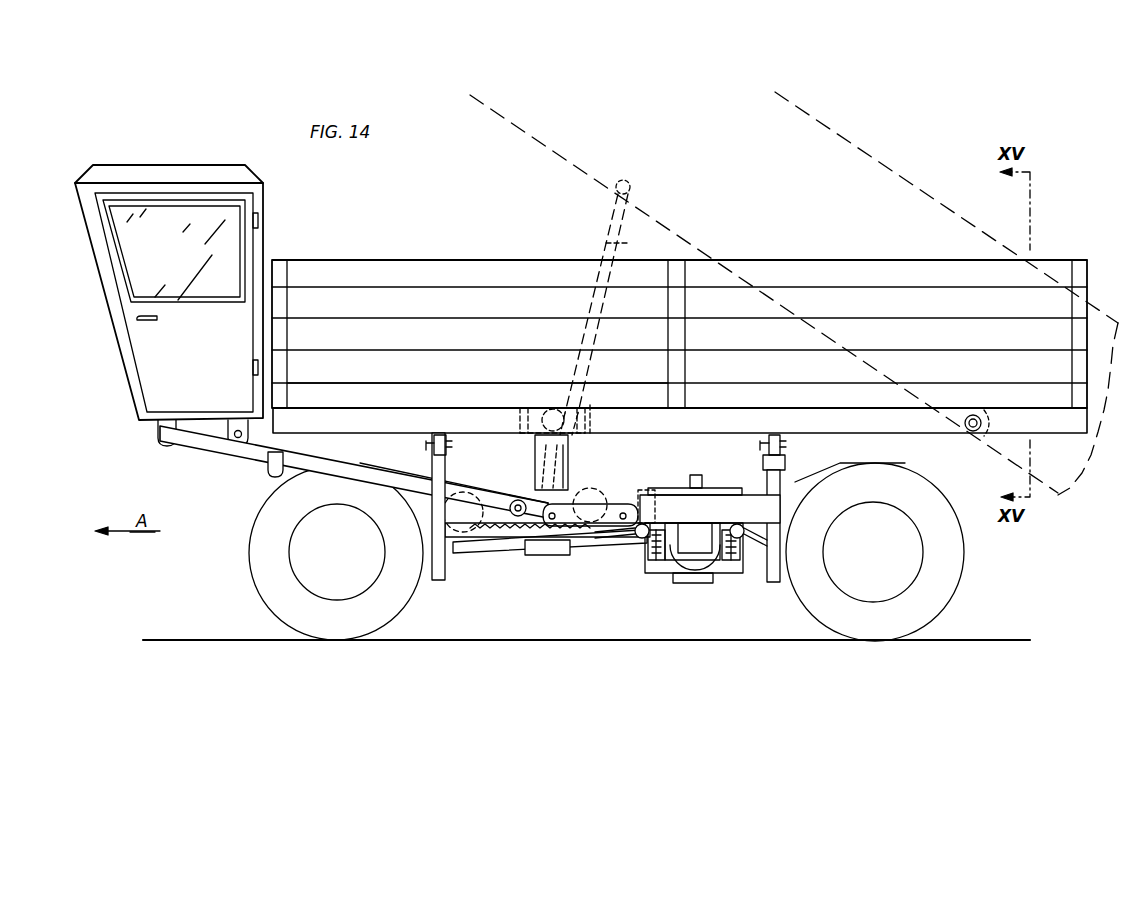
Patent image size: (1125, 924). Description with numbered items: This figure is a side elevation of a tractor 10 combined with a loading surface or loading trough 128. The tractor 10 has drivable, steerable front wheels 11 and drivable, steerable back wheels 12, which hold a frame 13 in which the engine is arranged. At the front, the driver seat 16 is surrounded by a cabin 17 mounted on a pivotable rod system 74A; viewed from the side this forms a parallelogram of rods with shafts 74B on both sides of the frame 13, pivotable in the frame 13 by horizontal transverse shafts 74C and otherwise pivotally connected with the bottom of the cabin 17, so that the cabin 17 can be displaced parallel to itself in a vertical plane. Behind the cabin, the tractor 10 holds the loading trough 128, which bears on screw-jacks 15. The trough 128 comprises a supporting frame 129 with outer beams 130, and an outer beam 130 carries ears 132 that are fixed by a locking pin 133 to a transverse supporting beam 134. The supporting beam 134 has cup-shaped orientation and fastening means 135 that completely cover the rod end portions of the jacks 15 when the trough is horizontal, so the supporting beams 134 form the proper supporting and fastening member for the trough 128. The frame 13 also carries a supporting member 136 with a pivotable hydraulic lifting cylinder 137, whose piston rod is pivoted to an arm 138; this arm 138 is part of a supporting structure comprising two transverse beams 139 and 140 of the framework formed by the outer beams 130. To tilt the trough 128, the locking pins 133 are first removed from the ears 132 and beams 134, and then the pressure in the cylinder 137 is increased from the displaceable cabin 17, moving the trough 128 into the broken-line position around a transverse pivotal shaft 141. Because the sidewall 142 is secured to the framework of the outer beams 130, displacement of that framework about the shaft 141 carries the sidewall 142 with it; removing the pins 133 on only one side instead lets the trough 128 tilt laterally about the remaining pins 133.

The tractor 10 is at (668, 490).
The front wheels 11 is at (287, 612).
The back wheels 12 is at (927, 612).
The frame 13 is at (690, 505).
The screw-jack 15 is at (448, 572).
The driver seat 16 is at (160, 244).
The cabin 17 is at (112, 338).
The pivotable rod system 74A is at (245, 458).
The shafts 74B is at (353, 458).
The horizontal shafts 74C is at (520, 500).
The loading trough 128 is at (503, 258).
The supporting frame 129 is at (858, 402).
The outer beam 130 is at (327, 412).
The ears 132 is at (454, 447).
The locking pin 133 is at (425, 446).
The supporting beam 134 is at (432, 433).
The cup-shaped orientation and fastening means 135 is at (452, 472).
The supporting member 136 is at (553, 556).
The hydraulic lifting cylinder 137 is at (606, 243).
The arm 138 is at (552, 410).
The transverse beam 139 is at (590, 400).
The transverse beam 140 is at (520, 410).
The pivotal shaft 141 is at (968, 434).
The sidewall 142 is at (953, 258).